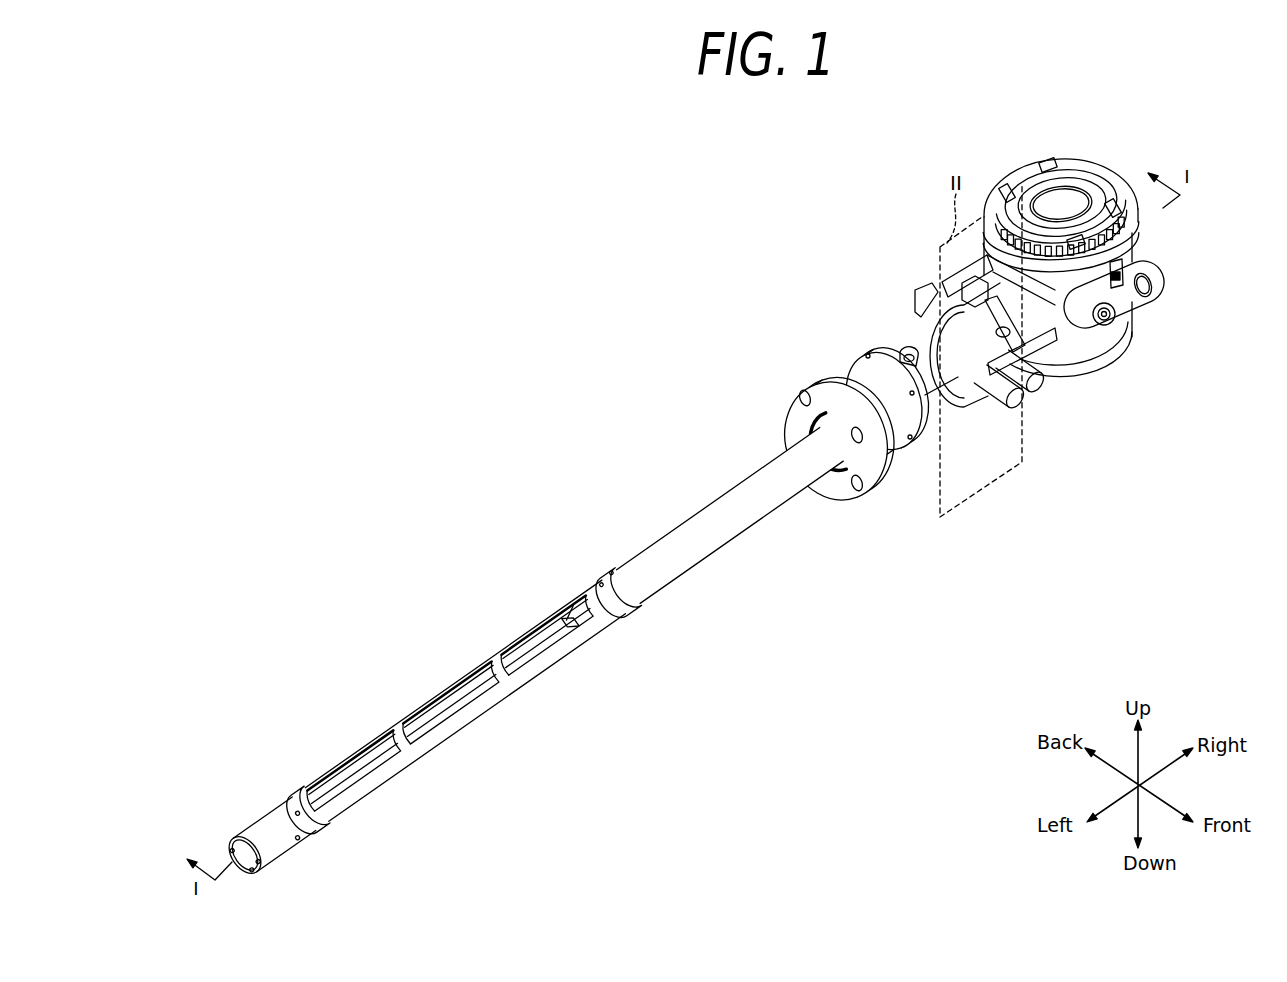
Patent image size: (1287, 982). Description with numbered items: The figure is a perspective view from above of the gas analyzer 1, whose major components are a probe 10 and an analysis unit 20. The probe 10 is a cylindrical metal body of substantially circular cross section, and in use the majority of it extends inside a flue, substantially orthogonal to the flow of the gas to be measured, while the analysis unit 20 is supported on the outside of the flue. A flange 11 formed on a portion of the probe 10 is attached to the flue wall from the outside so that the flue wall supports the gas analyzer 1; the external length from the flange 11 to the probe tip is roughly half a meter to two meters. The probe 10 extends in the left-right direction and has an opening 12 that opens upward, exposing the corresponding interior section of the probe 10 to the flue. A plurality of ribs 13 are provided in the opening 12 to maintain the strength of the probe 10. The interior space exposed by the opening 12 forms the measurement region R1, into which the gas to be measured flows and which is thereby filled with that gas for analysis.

The gas analyzer 1 is at (545, 236).
The probe 10 is at (592, 645).
The flange 11 is at (814, 381).
The opening 12 is at (353, 768).
The measurement region R1 is at (452, 700).
The ribs 13 is at (507, 648).
The analysis unit 20 is at (1140, 315).